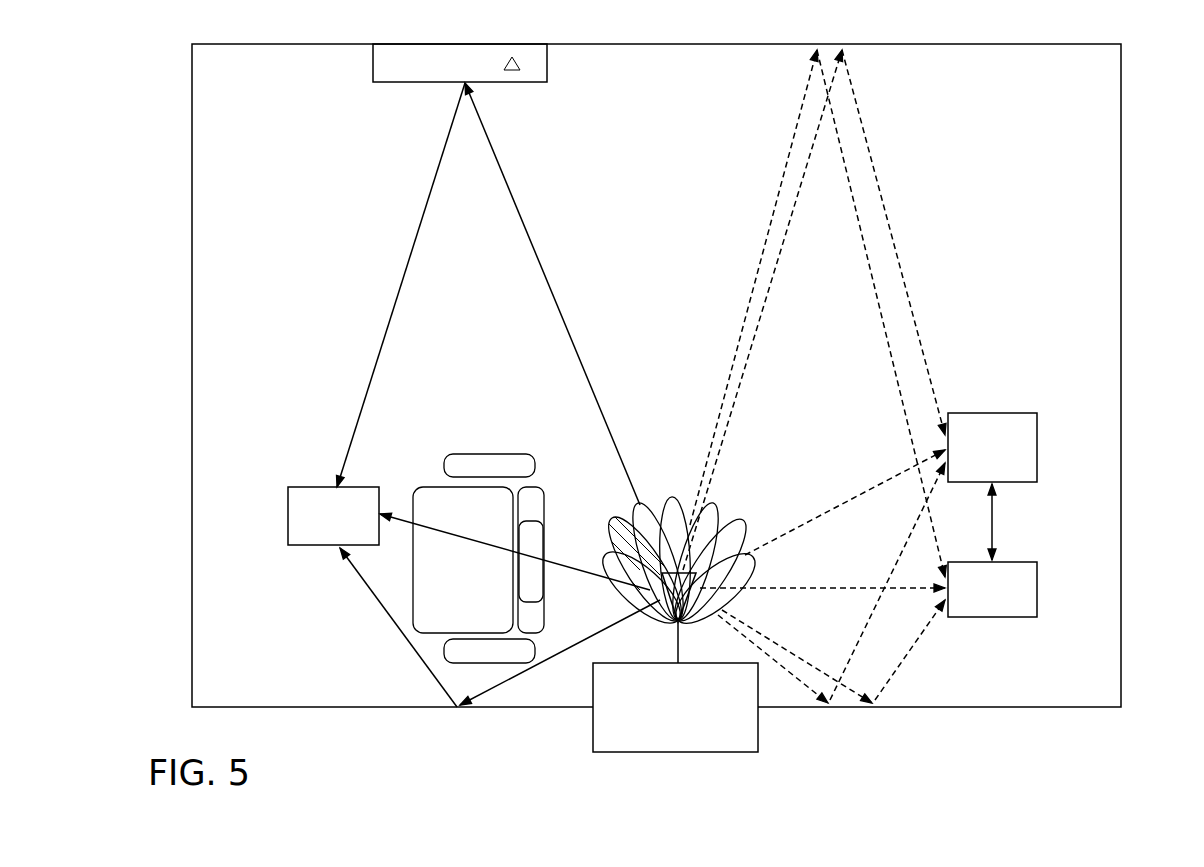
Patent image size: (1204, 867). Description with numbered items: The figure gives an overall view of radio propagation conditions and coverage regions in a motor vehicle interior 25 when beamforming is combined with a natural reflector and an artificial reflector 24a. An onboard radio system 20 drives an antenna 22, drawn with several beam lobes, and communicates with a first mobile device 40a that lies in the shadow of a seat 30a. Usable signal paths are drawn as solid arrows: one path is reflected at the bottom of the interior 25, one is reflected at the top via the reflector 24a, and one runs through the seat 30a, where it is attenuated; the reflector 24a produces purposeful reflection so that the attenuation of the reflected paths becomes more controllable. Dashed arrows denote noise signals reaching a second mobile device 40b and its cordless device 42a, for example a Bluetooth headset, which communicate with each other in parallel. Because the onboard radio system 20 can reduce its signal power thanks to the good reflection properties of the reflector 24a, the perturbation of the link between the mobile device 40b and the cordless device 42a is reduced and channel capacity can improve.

The onboard radio system 20 is at (757, 728).
The antenna 22 is at (670, 624).
The reflector 24a is at (409, 81).
The vehicle interior 25 is at (1121, 680).
The seat 30a is at (542, 510).
The mobile device 40a is at (363, 492).
The mobile device 40b is at (1035, 592).
The cordless device 42a is at (1035, 455).